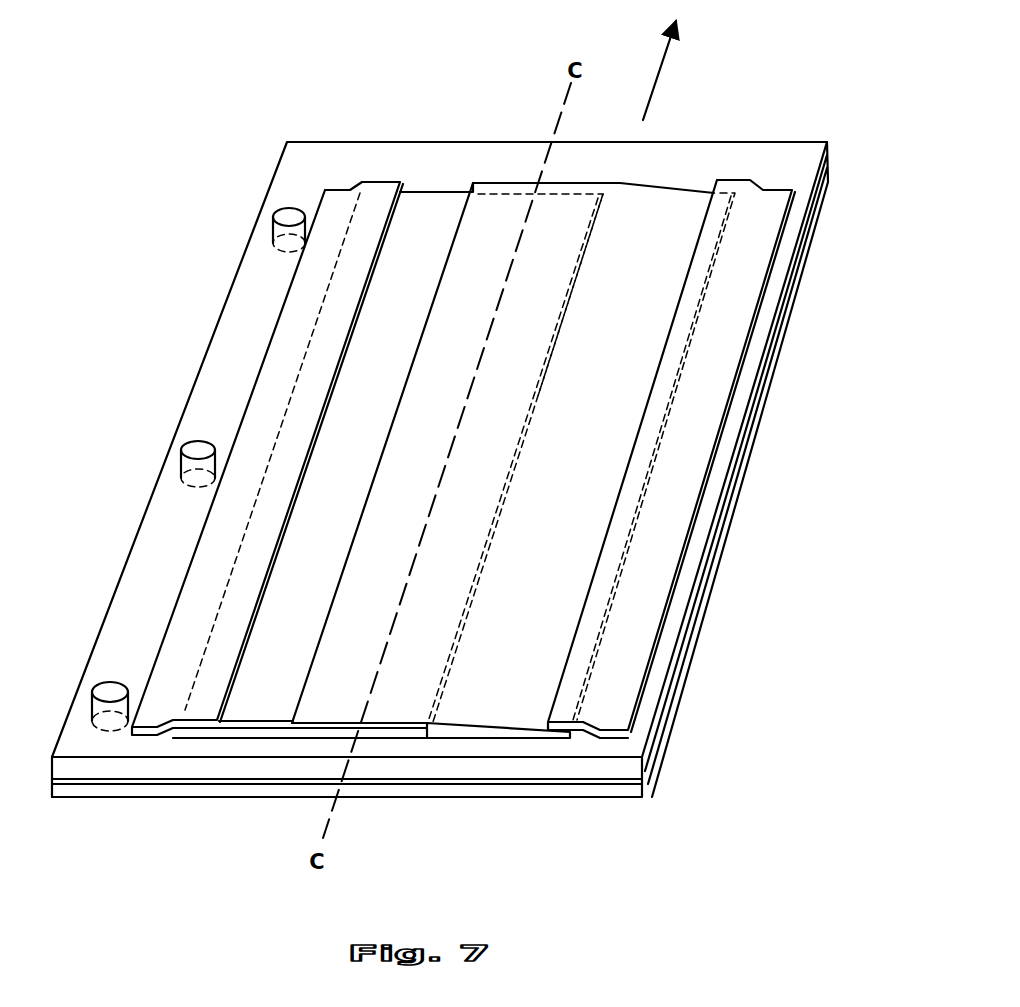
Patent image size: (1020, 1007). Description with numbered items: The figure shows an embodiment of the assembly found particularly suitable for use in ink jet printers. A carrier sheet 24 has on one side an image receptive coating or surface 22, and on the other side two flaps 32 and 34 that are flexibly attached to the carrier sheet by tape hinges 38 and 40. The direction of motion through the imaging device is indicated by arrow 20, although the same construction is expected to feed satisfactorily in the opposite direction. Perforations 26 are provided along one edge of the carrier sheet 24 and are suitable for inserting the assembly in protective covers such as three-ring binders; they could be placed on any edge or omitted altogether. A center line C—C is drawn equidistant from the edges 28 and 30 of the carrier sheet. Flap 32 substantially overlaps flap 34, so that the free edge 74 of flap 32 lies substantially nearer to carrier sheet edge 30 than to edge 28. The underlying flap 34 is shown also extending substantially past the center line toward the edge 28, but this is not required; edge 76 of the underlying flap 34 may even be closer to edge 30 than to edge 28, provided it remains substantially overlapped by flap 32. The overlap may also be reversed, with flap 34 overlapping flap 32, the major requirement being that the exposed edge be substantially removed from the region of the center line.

The arrow 20 is at (658, 78).
The image receptive coating 22 is at (618, 787).
The carrier sheet 24 is at (547, 768).
The perforations 26 is at (281, 209).
The edge 28 is at (734, 528).
The edge 30 is at (216, 299).
The flap 32 is at (552, 475).
The flap 34 is at (299, 559).
The tape hinge 38 is at (206, 619).
The tape hinge 40 is at (693, 395).
The free edge 74 is at (462, 212).
The edge 76 is at (573, 333).